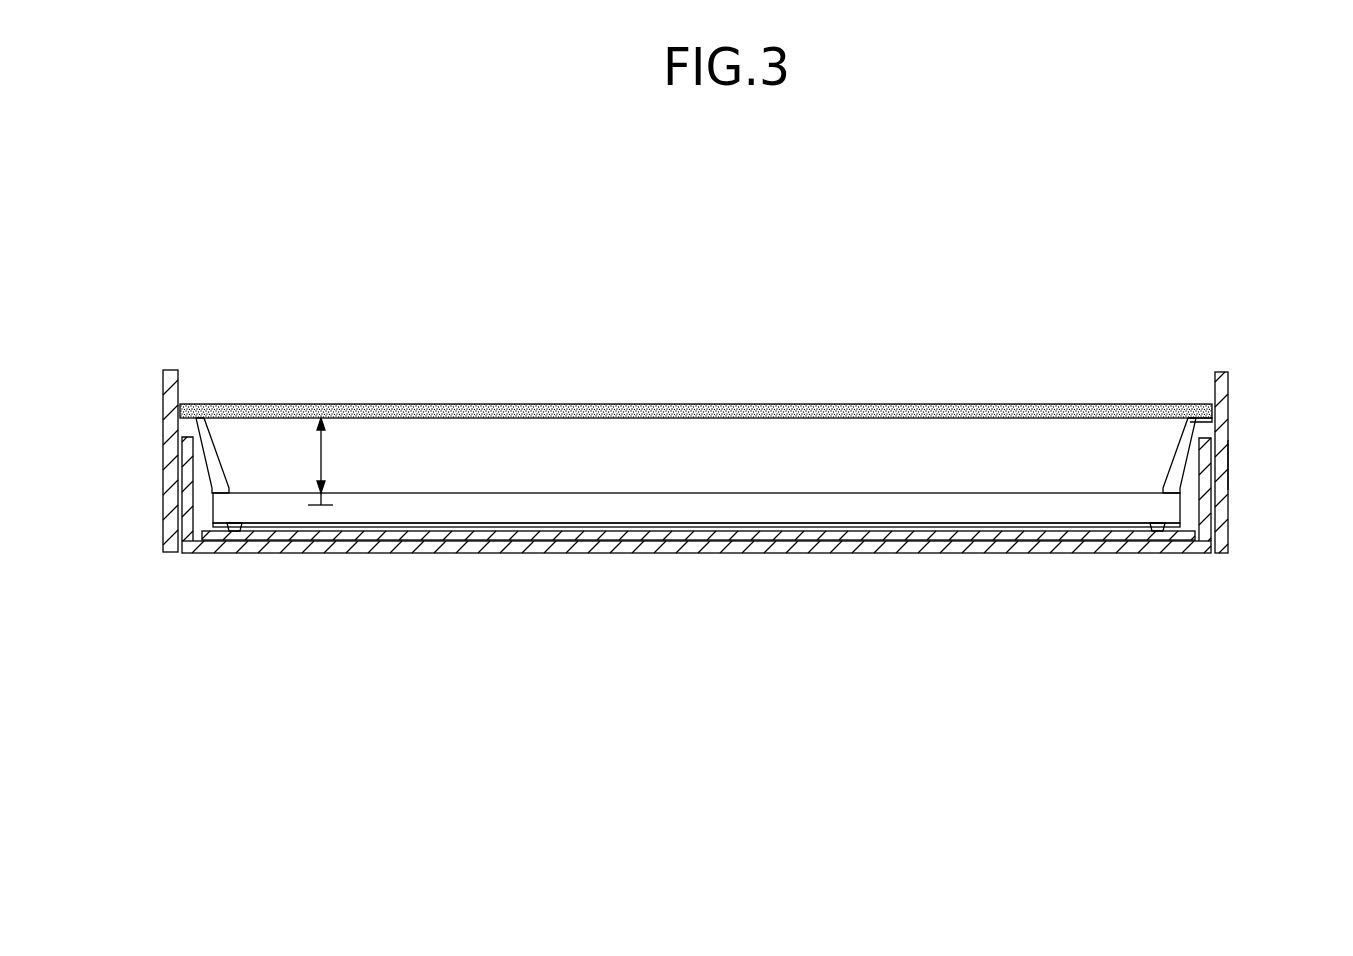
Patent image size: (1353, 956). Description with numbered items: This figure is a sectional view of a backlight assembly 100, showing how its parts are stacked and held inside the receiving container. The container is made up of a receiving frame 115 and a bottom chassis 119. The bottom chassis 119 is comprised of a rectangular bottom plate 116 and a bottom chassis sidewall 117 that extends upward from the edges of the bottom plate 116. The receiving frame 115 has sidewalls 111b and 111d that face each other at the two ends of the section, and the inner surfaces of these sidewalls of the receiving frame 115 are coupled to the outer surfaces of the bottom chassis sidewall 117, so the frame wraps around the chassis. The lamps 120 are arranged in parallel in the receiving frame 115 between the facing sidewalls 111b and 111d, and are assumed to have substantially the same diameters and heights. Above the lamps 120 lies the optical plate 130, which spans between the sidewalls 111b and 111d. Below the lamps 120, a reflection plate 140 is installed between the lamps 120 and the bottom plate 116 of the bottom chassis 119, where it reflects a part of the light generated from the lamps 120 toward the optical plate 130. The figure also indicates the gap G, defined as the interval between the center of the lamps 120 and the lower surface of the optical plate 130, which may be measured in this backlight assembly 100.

The backlight assembly 100 is at (921, 390).
The sidewall of the receiving frame 111b is at (1228, 500).
The sidewall of the receiving frame 111d is at (163, 495).
The receiving frame 115 is at (1230, 465).
The bottom plate 116 is at (1110, 553).
The bottom chassis sidewall 117 is at (1190, 553).
The bottom chassis 119 is at (1177, 625).
The lamps 120 is at (408, 513).
The optical plate 130 is at (562, 405).
The reflection plate 140 is at (538, 535).